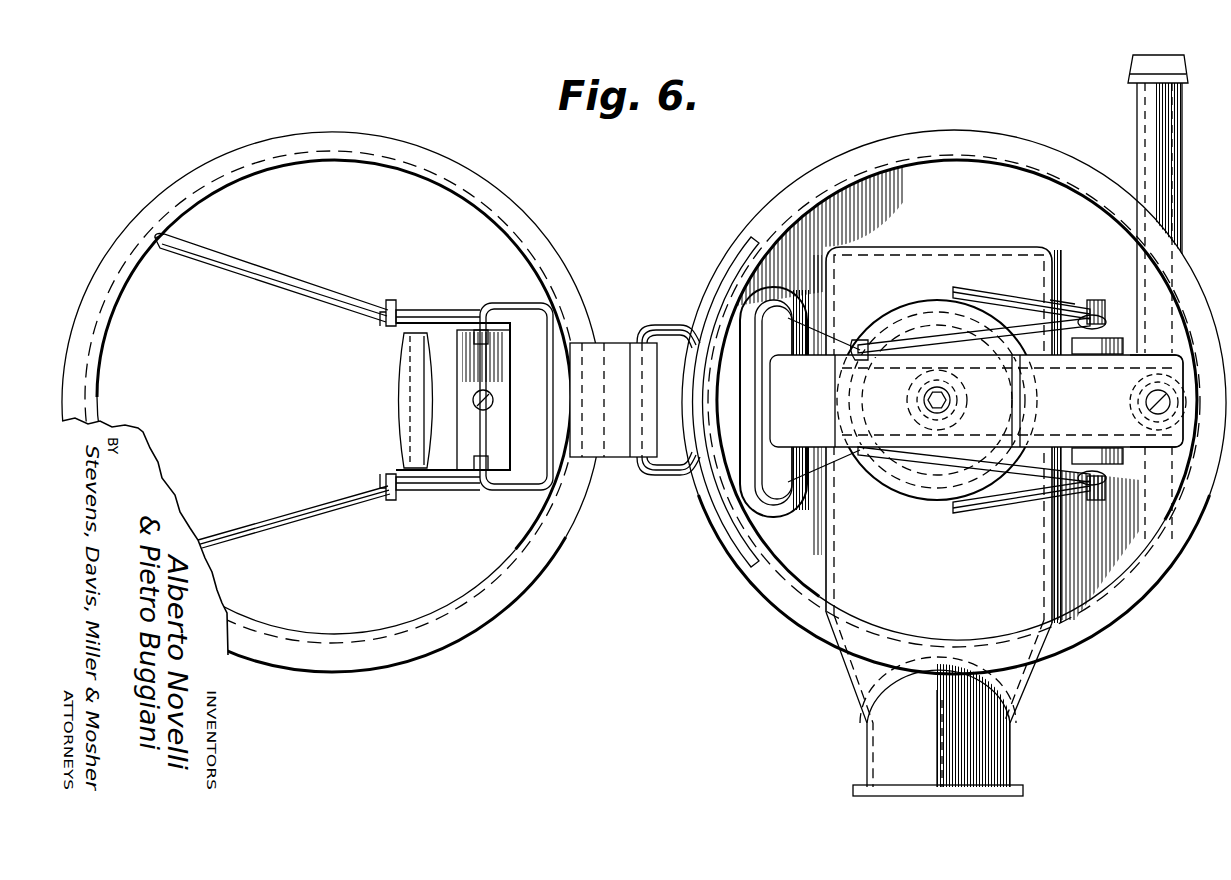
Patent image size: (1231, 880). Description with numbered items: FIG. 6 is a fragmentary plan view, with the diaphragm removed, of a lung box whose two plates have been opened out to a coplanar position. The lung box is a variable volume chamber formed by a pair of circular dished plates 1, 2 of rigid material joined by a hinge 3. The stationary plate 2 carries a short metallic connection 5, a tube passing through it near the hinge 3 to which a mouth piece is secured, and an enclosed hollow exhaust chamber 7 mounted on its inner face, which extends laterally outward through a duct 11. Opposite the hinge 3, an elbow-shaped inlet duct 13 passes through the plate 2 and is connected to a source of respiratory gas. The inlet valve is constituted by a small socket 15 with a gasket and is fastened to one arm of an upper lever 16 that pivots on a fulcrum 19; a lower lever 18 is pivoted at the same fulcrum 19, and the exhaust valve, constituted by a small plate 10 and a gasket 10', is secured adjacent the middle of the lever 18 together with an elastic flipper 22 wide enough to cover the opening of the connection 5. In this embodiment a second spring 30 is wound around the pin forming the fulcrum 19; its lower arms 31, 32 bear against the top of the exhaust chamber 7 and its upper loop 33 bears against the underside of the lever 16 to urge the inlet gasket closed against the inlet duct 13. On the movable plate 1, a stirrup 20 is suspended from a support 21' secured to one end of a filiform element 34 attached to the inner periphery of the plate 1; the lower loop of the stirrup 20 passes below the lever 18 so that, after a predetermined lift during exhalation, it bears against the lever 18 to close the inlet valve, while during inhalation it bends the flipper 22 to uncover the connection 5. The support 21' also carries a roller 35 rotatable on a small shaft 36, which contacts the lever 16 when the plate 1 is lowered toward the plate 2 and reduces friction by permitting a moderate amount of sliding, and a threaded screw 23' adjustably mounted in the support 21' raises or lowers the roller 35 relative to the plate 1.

The plate 1 is at (350, 131).
The plate 2 is at (968, 131).
The hinge 3 is at (656, 325).
The connection 5 is at (742, 466).
The exhaust chamber 7 is at (838, 568).
The small plate 10 is at (937, 383).
The gasket 10' is at (937, 347).
The duct 11 is at (865, 746).
The inlet duct 13 is at (1135, 112).
The socket 15 is at (1166, 445).
The lever 16 is at (1147, 450).
The lever 18 is at (976, 400).
The fulcrum 19 is at (1100, 301).
The stirrup 20 is at (543, 440).
The support 21' is at (453, 429).
The flipper 22 is at (814, 484).
The threaded screw 23' is at (481, 417).
The second spring 30 is at (1064, 304).
The lower arm 31 is at (986, 512).
The lower arm 32 is at (990, 287).
The upper loop 33 is at (857, 345).
The filiform element 34 is at (268, 288).
The roller 35 is at (400, 410).
The small shaft 36 is at (420, 310).